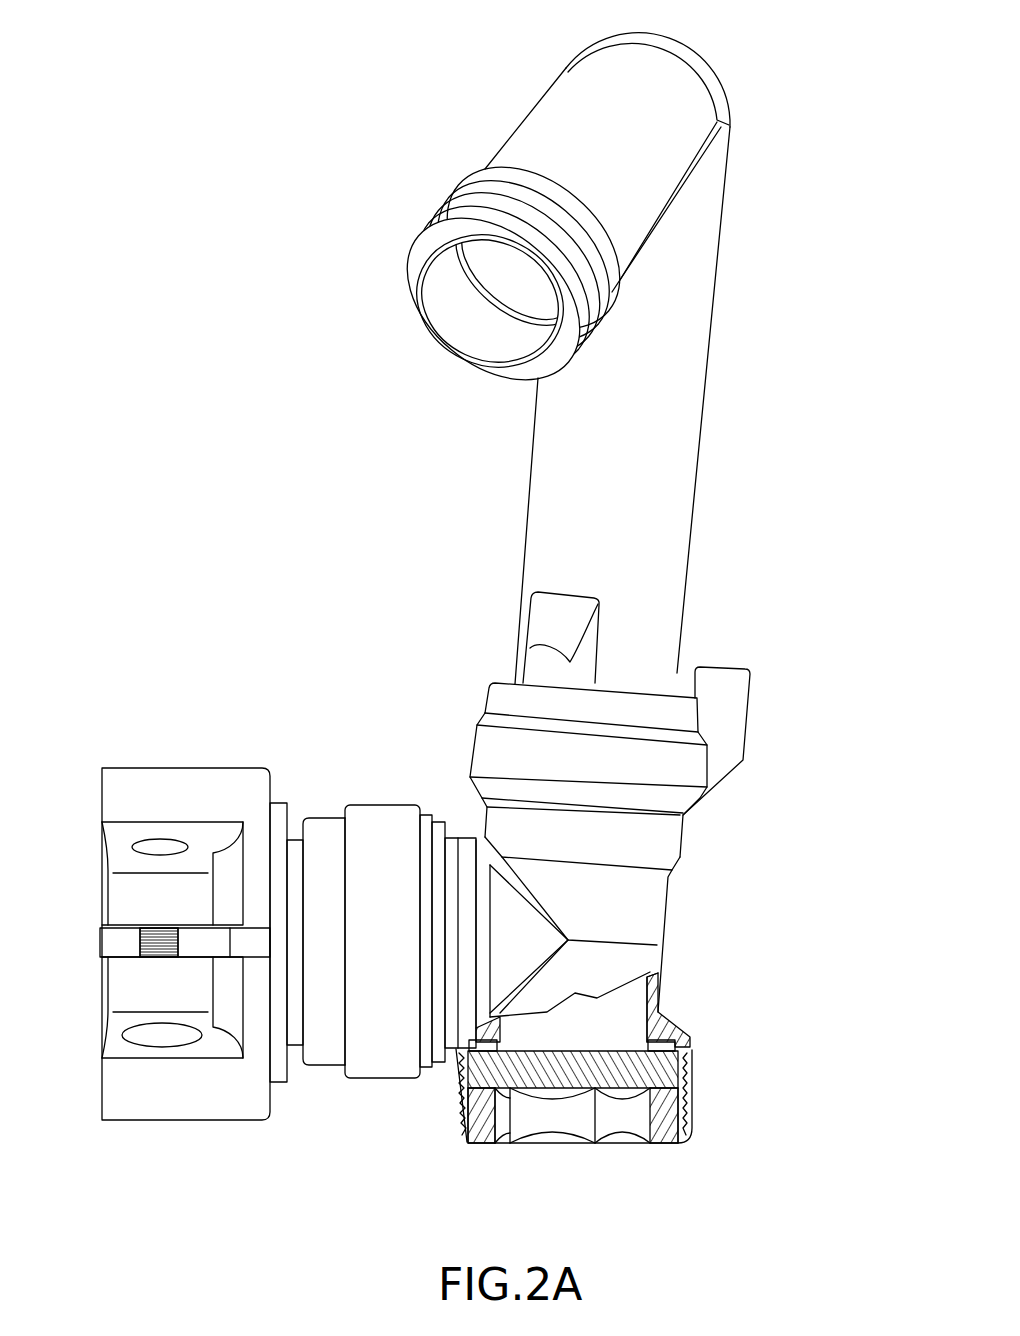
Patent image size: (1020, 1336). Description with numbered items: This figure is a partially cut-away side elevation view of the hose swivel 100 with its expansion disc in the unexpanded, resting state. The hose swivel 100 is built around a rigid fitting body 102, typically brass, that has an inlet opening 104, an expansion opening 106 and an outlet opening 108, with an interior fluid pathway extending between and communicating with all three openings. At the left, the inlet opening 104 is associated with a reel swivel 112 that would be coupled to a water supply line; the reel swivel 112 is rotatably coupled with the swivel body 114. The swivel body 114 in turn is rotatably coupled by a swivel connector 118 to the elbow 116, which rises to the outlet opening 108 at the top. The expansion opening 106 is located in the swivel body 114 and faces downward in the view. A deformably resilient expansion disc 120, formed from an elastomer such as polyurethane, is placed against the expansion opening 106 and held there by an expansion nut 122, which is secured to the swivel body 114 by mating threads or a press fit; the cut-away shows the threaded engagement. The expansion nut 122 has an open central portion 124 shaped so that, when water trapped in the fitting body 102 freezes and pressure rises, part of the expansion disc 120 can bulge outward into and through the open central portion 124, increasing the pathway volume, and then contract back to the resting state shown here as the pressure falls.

The hose swivel 100 is at (253, 290).
The fitting body 102 is at (721, 800).
The inlet opening 104 is at (102, 948).
The expansion opening 106 is at (618, 1017).
The outlet opening 108 is at (438, 328).
The reel swivel 112 is at (318, 827).
The swivel body 114 is at (633, 905).
The elbow 116 is at (675, 373).
The swivel connector 118 is at (498, 698).
The expansion disc 120 is at (655, 1072).
The expansion nut 122 is at (665, 1130).
The open central portion 124 is at (558, 1131).